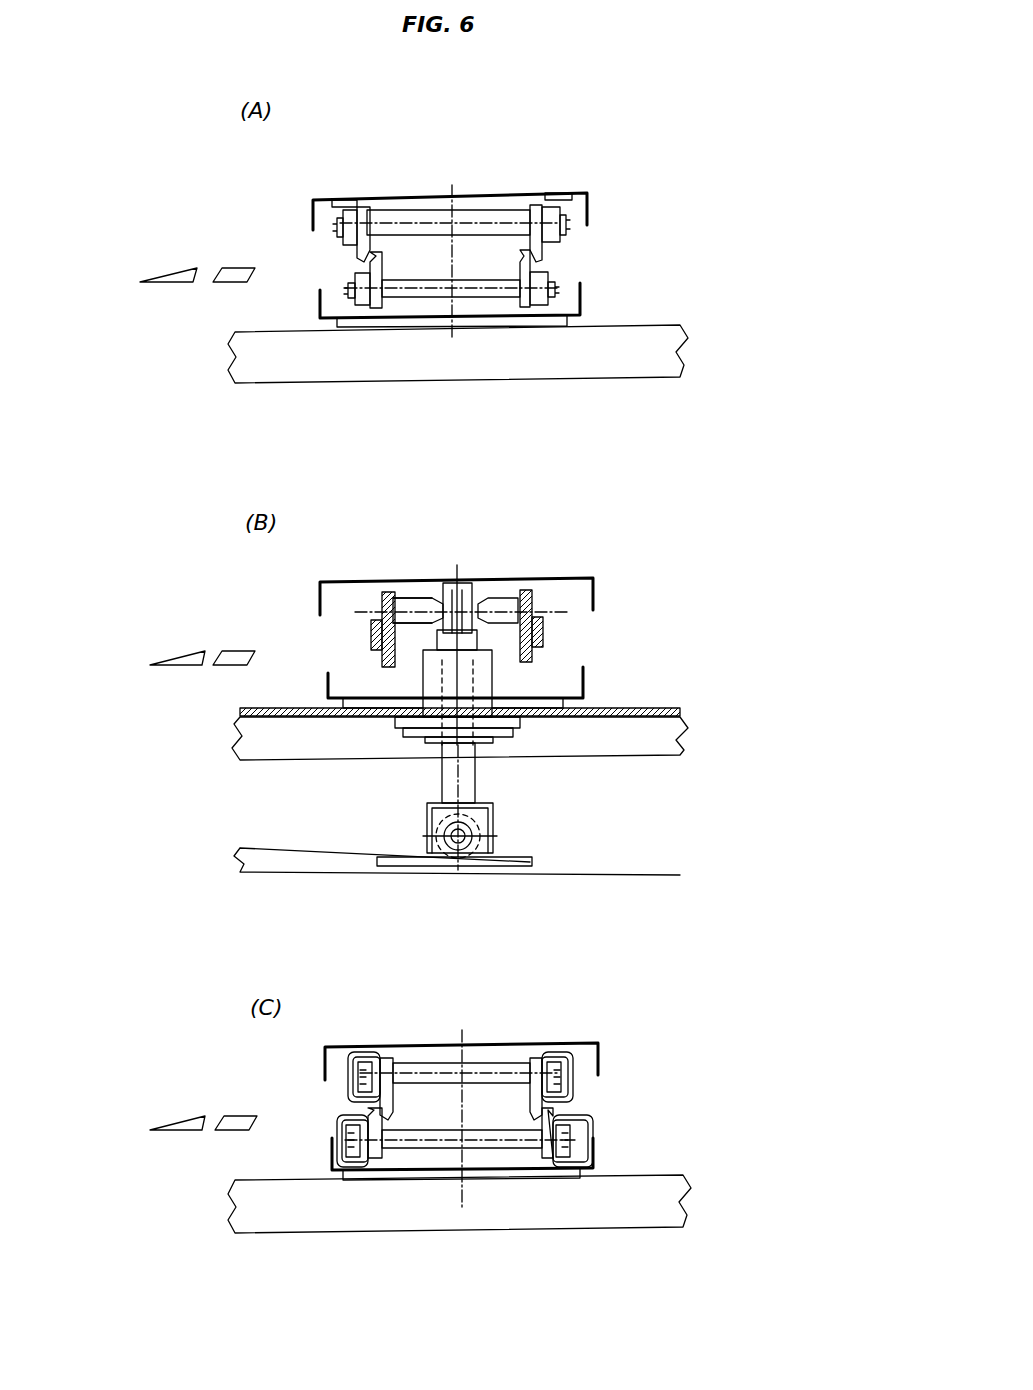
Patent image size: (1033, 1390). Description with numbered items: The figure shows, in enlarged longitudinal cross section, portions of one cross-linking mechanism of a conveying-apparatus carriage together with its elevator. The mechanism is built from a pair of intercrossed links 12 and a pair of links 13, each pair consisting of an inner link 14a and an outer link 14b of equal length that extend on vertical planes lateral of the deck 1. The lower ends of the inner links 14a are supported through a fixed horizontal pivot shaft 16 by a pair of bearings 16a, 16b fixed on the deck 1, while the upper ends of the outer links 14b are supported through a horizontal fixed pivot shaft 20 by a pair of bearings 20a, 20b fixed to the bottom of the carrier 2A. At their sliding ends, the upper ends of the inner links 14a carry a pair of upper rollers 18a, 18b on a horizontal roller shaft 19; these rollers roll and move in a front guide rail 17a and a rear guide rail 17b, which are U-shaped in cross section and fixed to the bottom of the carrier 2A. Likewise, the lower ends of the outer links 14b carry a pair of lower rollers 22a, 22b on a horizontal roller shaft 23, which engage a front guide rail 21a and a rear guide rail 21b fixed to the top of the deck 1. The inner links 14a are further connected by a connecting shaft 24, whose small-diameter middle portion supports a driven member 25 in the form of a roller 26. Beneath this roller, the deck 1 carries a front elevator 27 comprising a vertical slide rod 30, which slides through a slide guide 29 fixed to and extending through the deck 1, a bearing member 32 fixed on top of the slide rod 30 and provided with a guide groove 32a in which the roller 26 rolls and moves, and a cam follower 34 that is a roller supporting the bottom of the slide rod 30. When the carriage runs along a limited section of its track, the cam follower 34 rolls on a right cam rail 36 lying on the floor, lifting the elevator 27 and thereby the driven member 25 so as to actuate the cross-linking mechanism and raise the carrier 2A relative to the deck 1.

In FIG. 6A, the deck 1 is at (650, 354).
In FIG. 6B, the deck 1 is at (655, 717).
In FIG. 6C, the deck 1 is at (655, 1207).
In FIG. 6A, the carrier 2A is at (595, 198).
In FIG. 6B, the carrier 2A is at (598, 582).
In FIG. 6C, the carrier 2A is at (600, 1045).
In FIG. 6A, the intercrossed links 12 is at (352, 262).
In FIG. 6B, the intercrossed links 12 is at (362, 630).
In FIG. 6A, the links 13 is at (545, 260).
In FIG. 6B, the links 13 is at (548, 632).
In FIG. 6A, the inner link 14a is at (378, 308).
In FIG. 6B, the inner link 14a is at (383, 598).
In FIG. 6C, the inner link 14a is at (380, 1095).
In FIG. 6A, the outer link 14b is at (367, 215).
In FIG. 6B, the outer link 14b is at (385, 660).
In FIG. 6C, the outer link 14b is at (375, 1160).
In FIG. 6A, the pivot shaft 16 is at (465, 300).
In FIG. 6A, the bearing 16a is at (360, 308).
In FIG. 6A, the bearing 16b is at (537, 308).
In FIG. 6C, the front guide rail 17a is at (355, 1055).
In FIG. 6C, the rear guide rail 17b is at (575, 1060).
In FIG. 6C, the upper roller 18a is at (385, 1058).
In FIG. 6C, the upper roller 18b is at (537, 1058).
In FIG. 6C, the roller shaft 19 is at (480, 1065).
In FIG. 6A, the pivot shaft 20 is at (465, 215).
In FIG. 6A, the bearing 20a is at (348, 205).
In FIG. 6A, the bearing 20b is at (552, 203).
In FIG. 6C, the front guide rail 21a is at (340, 1125).
In FIG. 6C, the rear guide rail 21b is at (590, 1125).
In FIG. 6C, the lower roller 22a is at (355, 1172).
In FIG. 6C, the lower roller 22b is at (570, 1172).
In FIG. 6C, the roller shaft 23 is at (433, 1150).
In FIG. 6B, the connecting shaft 24 is at (483, 605).
In FIG. 6B, the driven member 25 is at (440, 598).
In FIG. 6B, the roller 26 is at (412, 610).
In FIG. 6B, the front elevator 27 is at (432, 778).
In FIG. 6B, the slide guide 29 is at (428, 682).
In FIG. 6B, the slide rod 30 is at (465, 778).
In FIG. 6B, the bearing member 32 is at (487, 633).
In FIG. 6B, the guide groove 32a is at (462, 598).
In FIG. 6B, the cam follower 34 is at (460, 858).
In FIG. 6B, the right cam rail 36 is at (262, 856).